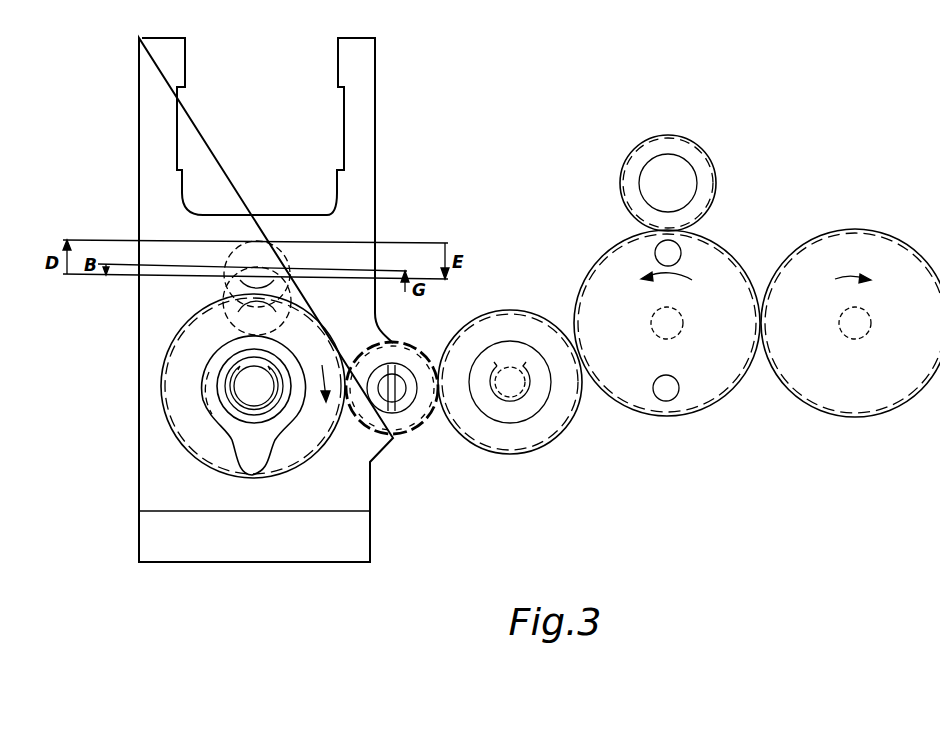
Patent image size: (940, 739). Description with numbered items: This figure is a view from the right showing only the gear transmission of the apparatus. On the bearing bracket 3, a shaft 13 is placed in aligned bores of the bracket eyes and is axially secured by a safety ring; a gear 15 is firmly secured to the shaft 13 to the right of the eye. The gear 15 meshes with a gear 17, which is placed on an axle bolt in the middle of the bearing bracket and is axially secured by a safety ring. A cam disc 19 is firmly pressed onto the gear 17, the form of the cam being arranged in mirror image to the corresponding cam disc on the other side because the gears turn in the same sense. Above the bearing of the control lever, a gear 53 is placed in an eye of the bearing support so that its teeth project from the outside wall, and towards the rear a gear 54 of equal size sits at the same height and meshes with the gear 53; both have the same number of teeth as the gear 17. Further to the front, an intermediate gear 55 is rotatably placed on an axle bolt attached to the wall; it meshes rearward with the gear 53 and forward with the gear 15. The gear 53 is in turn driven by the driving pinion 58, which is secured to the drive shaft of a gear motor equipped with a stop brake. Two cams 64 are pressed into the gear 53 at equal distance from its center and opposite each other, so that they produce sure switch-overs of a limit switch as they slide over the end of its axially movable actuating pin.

The bearing bracket 3 is at (145, 531).
The shaft 13 is at (400, 408).
The gear 15 is at (418, 420).
The gear 17 is at (310, 447).
The cam disc 19 is at (215, 408).
The gear 53 is at (666, 407).
The gear 54 is at (852, 403).
The intermediate gear 55 is at (510, 445).
The driving pinion 58 is at (668, 141).
The cams 64 is at (660, 393).